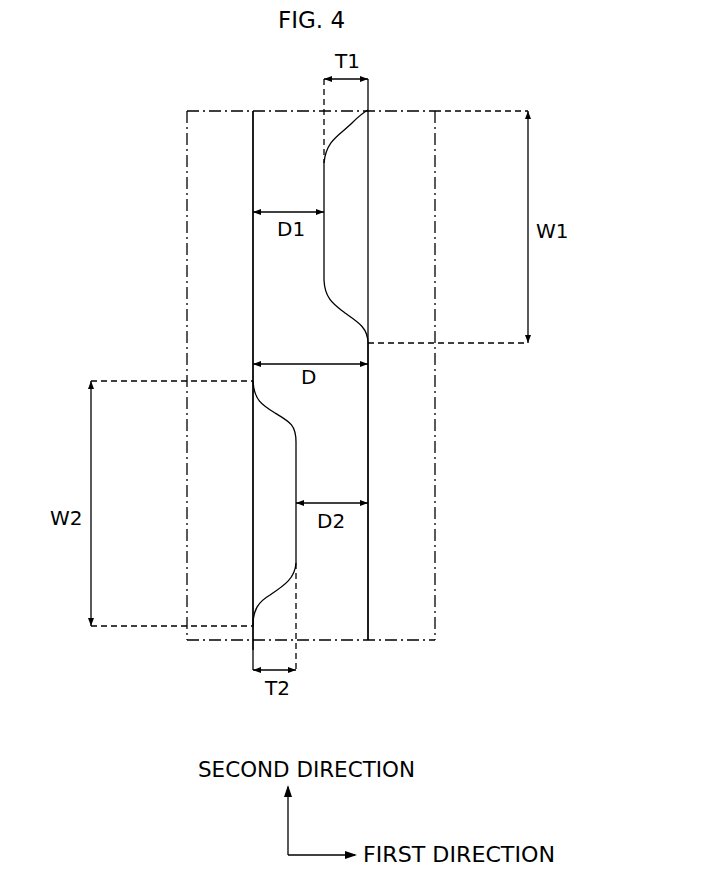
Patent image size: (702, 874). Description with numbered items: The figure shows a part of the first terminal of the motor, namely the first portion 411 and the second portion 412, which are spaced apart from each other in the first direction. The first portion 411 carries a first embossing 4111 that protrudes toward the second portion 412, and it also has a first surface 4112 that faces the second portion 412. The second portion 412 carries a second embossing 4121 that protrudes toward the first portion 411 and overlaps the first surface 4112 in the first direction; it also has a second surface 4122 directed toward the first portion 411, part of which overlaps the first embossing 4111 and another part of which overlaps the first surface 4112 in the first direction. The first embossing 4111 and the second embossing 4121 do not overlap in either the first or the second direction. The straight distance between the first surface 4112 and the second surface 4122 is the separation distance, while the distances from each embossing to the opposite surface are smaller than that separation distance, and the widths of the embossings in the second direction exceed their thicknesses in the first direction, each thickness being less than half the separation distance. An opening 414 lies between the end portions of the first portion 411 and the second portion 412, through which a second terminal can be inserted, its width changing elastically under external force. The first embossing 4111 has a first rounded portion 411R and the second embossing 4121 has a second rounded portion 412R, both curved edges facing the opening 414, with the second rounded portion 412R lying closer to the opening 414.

The first portion 411 is at (368, 388).
The first embossing 4111 is at (352, 220).
The first surface 4112 is at (368, 562).
The first rounded portion 411R is at (337, 307).
The second portion 412 is at (253, 347).
The second embossing 4121 is at (267, 510).
The second surface 4122 is at (253, 237).
The second rounded portion 412R is at (288, 582).
The opening 414 is at (345, 621).